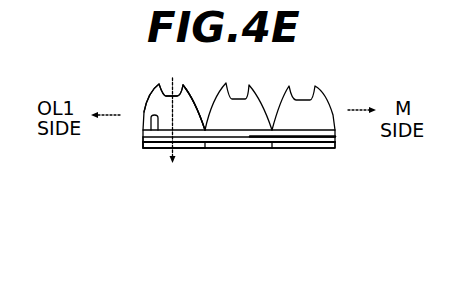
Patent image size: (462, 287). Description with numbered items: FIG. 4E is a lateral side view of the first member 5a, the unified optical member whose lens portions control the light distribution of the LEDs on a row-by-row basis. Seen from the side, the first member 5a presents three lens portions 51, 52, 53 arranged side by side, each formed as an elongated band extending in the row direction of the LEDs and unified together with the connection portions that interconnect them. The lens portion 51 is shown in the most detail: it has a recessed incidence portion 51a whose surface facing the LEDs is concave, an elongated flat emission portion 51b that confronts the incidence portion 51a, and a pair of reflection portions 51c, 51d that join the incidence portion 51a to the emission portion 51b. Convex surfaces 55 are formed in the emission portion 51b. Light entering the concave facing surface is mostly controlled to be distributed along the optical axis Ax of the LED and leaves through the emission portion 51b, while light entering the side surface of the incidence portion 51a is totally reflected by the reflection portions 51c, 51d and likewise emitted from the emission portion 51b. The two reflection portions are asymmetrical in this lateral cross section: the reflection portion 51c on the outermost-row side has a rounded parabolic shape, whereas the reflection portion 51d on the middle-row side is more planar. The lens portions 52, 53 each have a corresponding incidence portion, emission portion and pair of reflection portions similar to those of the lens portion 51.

The first member 5a is at (90, 87).
The lens portion 51 is at (182, 152).
The incidence portion 51a is at (157, 85).
The emission portion 51b is at (146, 150).
The reflection portion 51c is at (151, 113).
The reflection portion 51d is at (191, 92).
The lens portion 52 is at (247, 152).
The lens portion 53 is at (313, 152).
The convex surface 55 is at (143, 144).
The optical axis Ax is at (171, 135).